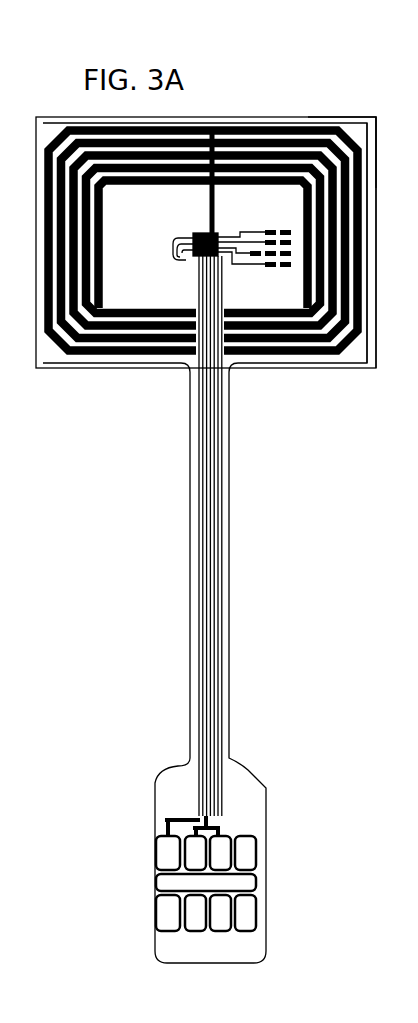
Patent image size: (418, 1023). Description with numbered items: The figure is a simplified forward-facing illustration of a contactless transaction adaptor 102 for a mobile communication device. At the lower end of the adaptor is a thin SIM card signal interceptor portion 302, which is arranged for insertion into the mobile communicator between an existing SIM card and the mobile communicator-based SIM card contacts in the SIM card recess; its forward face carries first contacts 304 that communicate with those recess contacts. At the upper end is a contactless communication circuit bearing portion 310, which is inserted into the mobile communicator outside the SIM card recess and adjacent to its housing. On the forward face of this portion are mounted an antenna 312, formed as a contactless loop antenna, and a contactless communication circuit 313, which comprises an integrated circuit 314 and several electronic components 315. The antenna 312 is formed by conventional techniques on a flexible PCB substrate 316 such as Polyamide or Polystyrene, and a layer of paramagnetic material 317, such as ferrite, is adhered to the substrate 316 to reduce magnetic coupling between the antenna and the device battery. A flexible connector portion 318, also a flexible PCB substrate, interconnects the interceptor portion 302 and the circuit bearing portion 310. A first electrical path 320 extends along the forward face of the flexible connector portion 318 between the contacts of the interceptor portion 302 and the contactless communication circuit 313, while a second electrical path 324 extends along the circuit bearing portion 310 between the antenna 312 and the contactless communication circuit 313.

The contactless transaction adaptor 102 is at (80, 478).
The thin SIM card signal interceptor portion 302 is at (130, 860).
The first contacts 304 is at (207, 912).
The contactless communication circuit bearing portion 310 is at (282, 93).
The antenna 312 is at (338, 122).
The contactless communication circuit 313 is at (155, 212).
The integrated circuit 314 is at (178, 258).
The electronic components 315 is at (293, 258).
The flexible PCB substrate 316 is at (45, 357).
The layer of paramagnetic material 317 is at (417, 190).
The flexible connector portion 318 is at (240, 588).
The first electrical path 320 is at (207, 500).
The second electrical path 324 is at (197, 200).